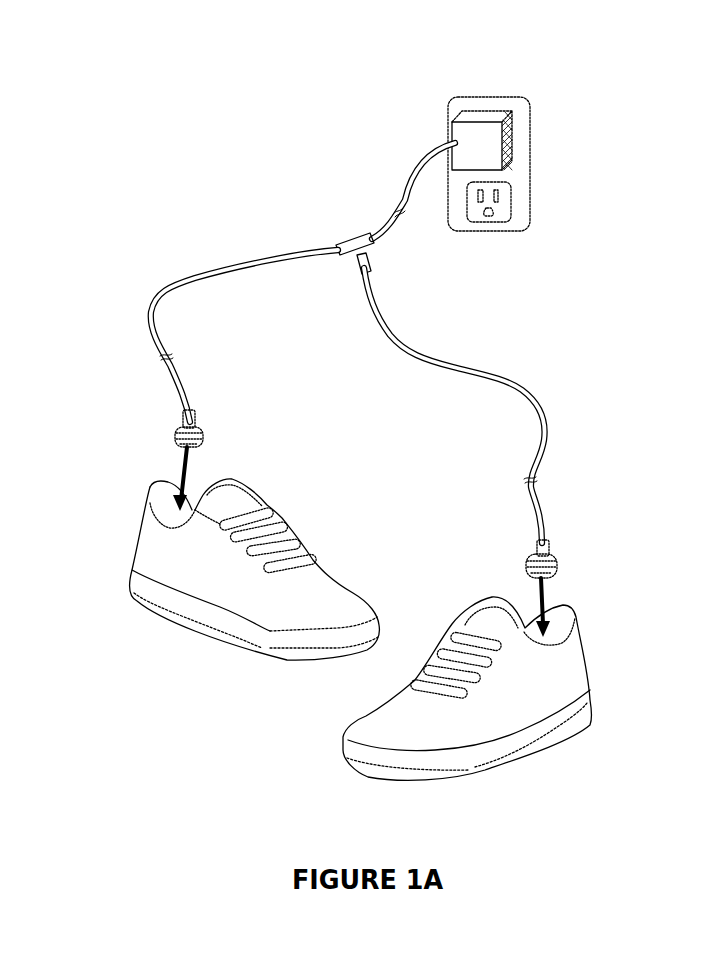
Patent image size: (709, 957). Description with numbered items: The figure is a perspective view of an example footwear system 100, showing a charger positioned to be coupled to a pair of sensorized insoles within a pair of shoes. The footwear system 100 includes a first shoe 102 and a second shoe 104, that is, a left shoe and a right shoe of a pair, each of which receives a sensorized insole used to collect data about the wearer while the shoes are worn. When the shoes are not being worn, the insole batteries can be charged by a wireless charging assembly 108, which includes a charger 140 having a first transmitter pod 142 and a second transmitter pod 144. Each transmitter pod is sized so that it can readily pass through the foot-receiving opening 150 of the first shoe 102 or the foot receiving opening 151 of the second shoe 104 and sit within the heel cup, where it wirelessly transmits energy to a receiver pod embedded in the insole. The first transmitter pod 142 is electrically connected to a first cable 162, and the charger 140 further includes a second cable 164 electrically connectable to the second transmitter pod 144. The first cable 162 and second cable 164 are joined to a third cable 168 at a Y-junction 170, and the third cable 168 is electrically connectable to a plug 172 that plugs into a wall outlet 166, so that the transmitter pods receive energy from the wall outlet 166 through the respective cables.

The footwear system 100 is at (166, 137).
The first shoe 102 is at (138, 543).
The second shoe 104 is at (577, 663).
The wireless charging assembly 108 is at (352, 222).
The charger 140 is at (254, 280).
The first transmitter pod 142 is at (175, 438).
The second transmitter pod 144 is at (527, 565).
The foot-receiving opening 150 is at (165, 496).
The foot receiving opening 151 is at (557, 612).
The first cable 162 is at (156, 292).
The second cable 164 is at (487, 370).
The wall outlet 166 is at (452, 92).
The third cable 168 is at (406, 192).
The Y-junction 170 is at (368, 252).
The plug 172 is at (510, 138).